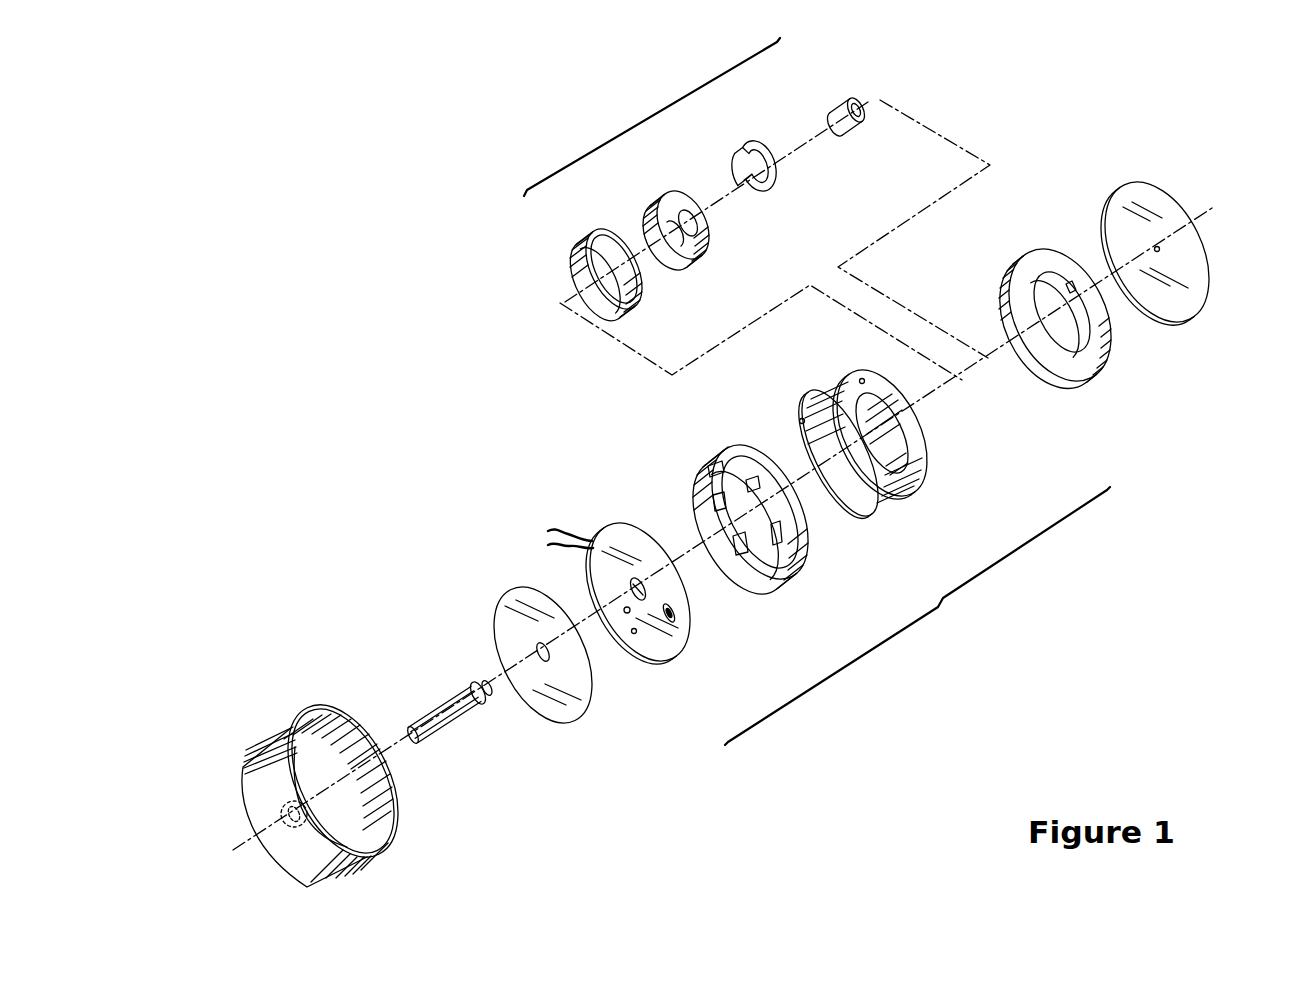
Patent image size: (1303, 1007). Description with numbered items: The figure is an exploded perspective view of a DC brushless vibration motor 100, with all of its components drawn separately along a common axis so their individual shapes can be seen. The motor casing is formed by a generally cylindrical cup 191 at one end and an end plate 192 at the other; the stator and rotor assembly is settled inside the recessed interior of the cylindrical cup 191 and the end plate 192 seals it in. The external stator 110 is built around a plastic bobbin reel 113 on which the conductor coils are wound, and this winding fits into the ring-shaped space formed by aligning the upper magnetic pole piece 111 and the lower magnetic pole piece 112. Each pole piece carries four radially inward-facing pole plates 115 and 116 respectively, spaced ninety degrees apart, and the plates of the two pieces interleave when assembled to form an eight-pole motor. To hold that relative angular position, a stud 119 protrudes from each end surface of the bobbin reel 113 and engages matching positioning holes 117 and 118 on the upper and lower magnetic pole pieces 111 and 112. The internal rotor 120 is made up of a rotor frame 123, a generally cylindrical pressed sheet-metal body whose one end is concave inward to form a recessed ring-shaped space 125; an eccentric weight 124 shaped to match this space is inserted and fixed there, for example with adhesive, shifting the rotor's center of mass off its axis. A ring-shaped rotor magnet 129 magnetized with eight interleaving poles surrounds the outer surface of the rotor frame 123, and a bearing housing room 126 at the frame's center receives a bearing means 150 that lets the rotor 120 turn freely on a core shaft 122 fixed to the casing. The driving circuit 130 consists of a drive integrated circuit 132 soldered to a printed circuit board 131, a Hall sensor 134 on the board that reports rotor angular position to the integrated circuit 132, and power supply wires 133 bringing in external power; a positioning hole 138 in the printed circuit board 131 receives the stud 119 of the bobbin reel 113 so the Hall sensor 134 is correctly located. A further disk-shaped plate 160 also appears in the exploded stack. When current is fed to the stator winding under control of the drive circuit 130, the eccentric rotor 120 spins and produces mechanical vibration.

The DC brushless vibration motor 100 is at (1105, 95).
The stator 110 is at (835, 515).
The upper magnetic pole piece 111 is at (1059, 320).
The lower magnetic pole piece 112 is at (751, 516).
The bobbin reel 113 is at (864, 447).
The pole plates 115 is at (1068, 283).
The pole plates 116 is at (758, 477).
The positioning hole 117 is at (1034, 258).
The positioning hole 118 is at (713, 487).
The stud 119 is at (862, 380).
The rotor 120 is at (658, 114).
The core shaft 122 is at (443, 725).
The rotor frame 123 is at (694, 222).
The eccentric weight 124 is at (750, 152).
The recessed ring-shaped space 125 is at (705, 247).
The bearing housing room 126 is at (692, 225).
The rotor magnet 129 is at (578, 250).
The driving circuit 130 is at (626, 585).
The printed circuit board 131 is at (683, 648).
The integrated circuit 132 is at (675, 613).
The power supply wires 133 is at (548, 531).
The Hall sensor 134 is at (633, 632).
The positioning hole 138 is at (612, 538).
The bearing means 150 is at (832, 122).
The disk plate 160 is at (570, 703).
The cylindrical cup 191 is at (393, 838).
The end plate 192 is at (1195, 293).